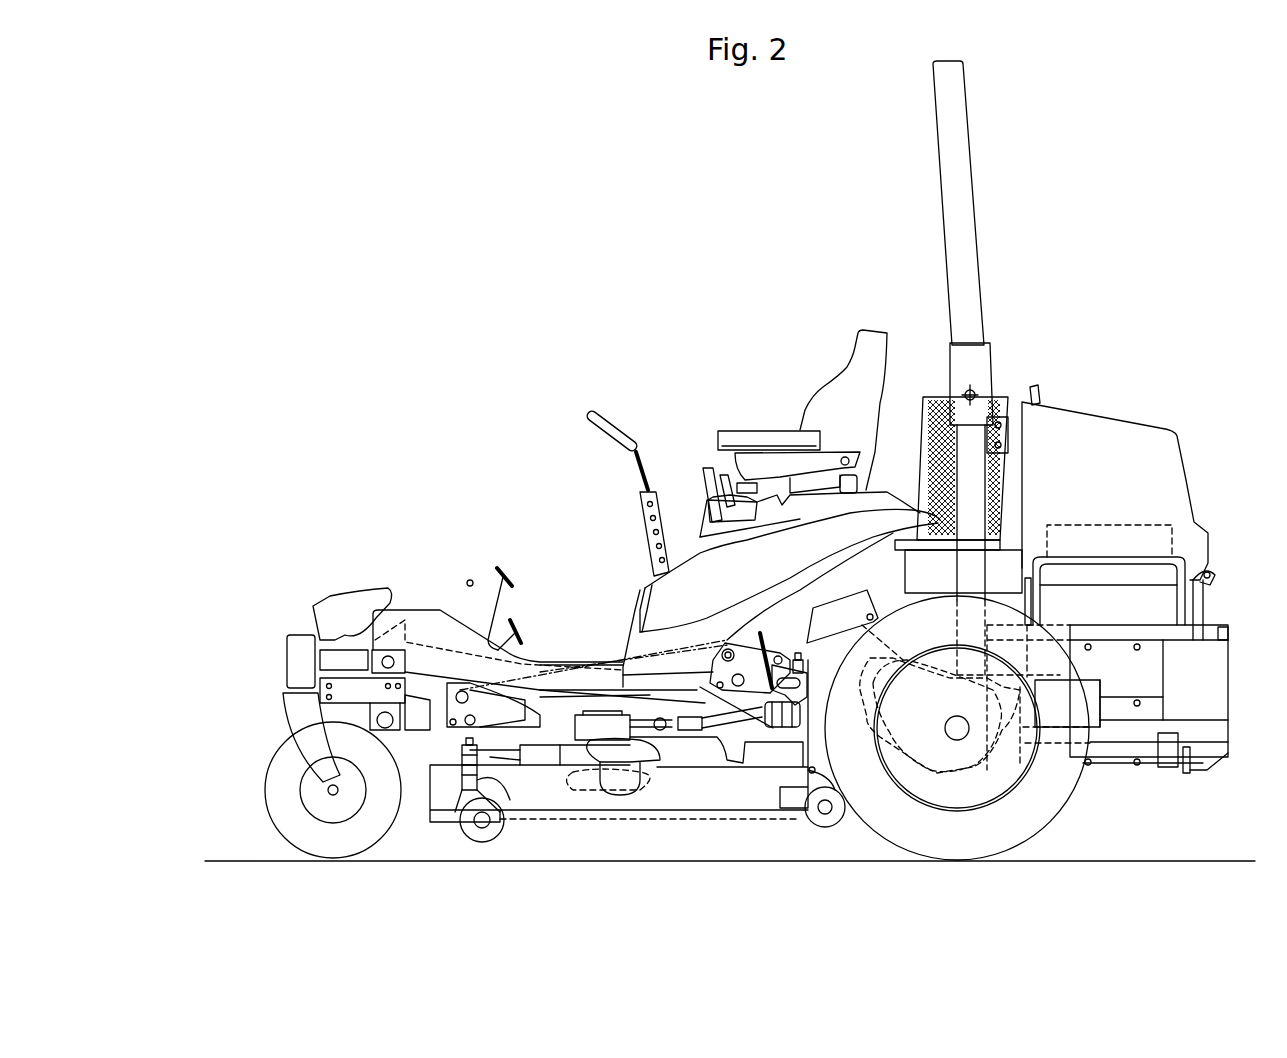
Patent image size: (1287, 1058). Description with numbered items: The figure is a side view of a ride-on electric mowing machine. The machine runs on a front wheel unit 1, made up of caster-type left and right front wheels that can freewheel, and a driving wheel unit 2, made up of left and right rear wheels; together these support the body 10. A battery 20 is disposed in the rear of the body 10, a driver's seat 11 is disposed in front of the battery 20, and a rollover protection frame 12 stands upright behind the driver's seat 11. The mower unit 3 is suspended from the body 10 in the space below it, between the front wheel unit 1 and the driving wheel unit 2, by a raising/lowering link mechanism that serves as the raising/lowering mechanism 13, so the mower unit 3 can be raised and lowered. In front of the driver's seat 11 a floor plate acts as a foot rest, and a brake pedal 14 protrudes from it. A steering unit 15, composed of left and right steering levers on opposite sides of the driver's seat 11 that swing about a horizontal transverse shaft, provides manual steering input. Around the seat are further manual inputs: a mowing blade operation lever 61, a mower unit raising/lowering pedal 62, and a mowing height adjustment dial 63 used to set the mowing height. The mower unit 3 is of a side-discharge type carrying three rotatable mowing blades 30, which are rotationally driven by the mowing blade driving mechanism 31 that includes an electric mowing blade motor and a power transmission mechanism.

The front wheel unit 1 is at (268, 790).
The driving wheel unit 2 is at (1060, 790).
The mower unit 3 is at (712, 828).
The body 10 is at (428, 600).
The driver's seat 11 is at (845, 388).
The rollover protection frame 12 is at (947, 172).
The raising/lowering mechanism 13 is at (445, 730).
The brake pedal 14 is at (510, 580).
The steering unit 15 is at (605, 432).
The battery 20 is at (1171, 603).
The mowing blades 30 is at (590, 827).
The mowing blade driving mechanism 31 is at (601, 700).
The mowing blade operation lever 61 is at (705, 467).
The mower unit raising/lowering pedal 62 is at (520, 636).
The mowing height adjustment dial 63 is at (750, 470).